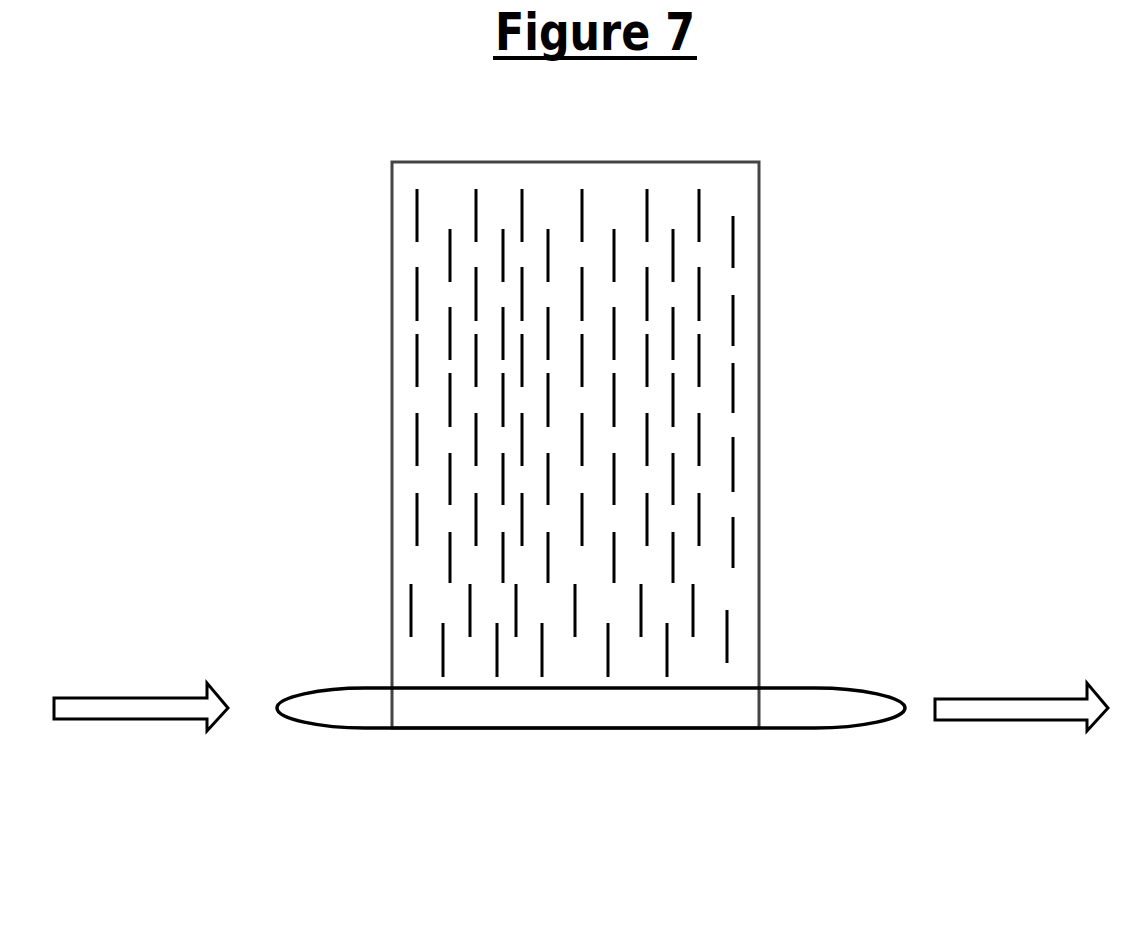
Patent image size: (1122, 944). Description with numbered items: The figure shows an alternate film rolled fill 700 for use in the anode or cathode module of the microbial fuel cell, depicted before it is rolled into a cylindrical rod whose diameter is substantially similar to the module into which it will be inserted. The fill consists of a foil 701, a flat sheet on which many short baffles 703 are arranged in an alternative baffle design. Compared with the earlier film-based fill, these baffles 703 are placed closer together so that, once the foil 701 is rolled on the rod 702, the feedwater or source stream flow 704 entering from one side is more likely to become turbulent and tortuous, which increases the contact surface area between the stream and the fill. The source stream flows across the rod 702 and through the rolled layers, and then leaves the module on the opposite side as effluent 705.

The film rolled fill 700 is at (685, 532).
The foil 701 is at (575, 445).
The rod 702 is at (591, 710).
The baffles 703 is at (732, 359).
The feedwater or source stream flow 704 is at (141, 689).
The effluent 705 is at (1021, 689).